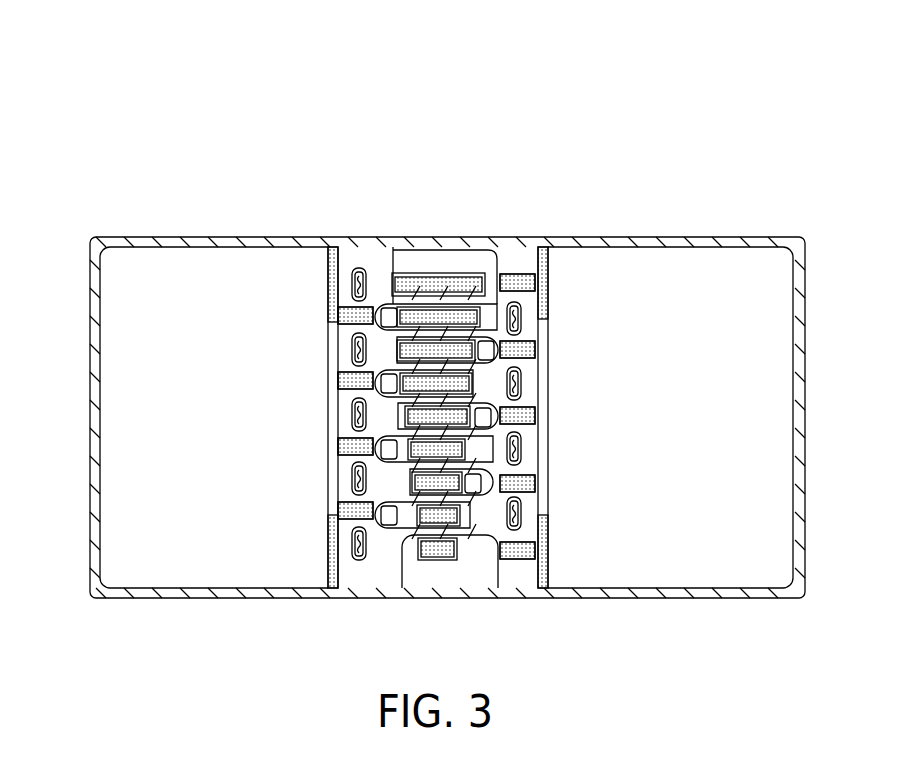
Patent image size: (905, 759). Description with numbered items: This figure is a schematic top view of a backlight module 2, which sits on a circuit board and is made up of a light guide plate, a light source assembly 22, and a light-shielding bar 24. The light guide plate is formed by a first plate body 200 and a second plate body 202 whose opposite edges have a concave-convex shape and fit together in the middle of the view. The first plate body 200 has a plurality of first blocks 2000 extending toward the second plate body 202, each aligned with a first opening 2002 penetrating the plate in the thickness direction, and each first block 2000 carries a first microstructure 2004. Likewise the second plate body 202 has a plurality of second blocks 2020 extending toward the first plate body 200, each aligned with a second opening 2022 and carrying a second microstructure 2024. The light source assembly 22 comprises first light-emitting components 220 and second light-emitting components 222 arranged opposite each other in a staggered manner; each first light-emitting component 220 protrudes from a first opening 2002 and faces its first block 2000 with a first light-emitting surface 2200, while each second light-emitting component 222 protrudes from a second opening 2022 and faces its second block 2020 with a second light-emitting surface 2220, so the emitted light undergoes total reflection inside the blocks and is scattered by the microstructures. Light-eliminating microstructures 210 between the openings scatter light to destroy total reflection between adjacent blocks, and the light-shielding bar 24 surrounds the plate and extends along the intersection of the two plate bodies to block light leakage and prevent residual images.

The backlight module 2 is at (92, 162).
The first plate body 200 is at (180, 287).
The second plate body 202 is at (742, 287).
The light-shielding bar 24 is at (273, 238).
The light-eliminating microstructures 210 is at (338, 448).
The light source assembly 22 is at (288, 178).
The first light-emitting component 220 is at (352, 287).
The first light-emitting surface 2200 is at (370, 281).
The second light-emitting component 222 is at (523, 320).
The second light-emitting surface 2220 is at (502, 305).
The first block 2000 is at (473, 268).
The first opening 2002 is at (388, 310).
The first microstructure 2004 is at (450, 284).
The second block 2020 is at (405, 515).
The second microstructure 2024 is at (420, 316).
The second opening 2022 is at (528, 300).